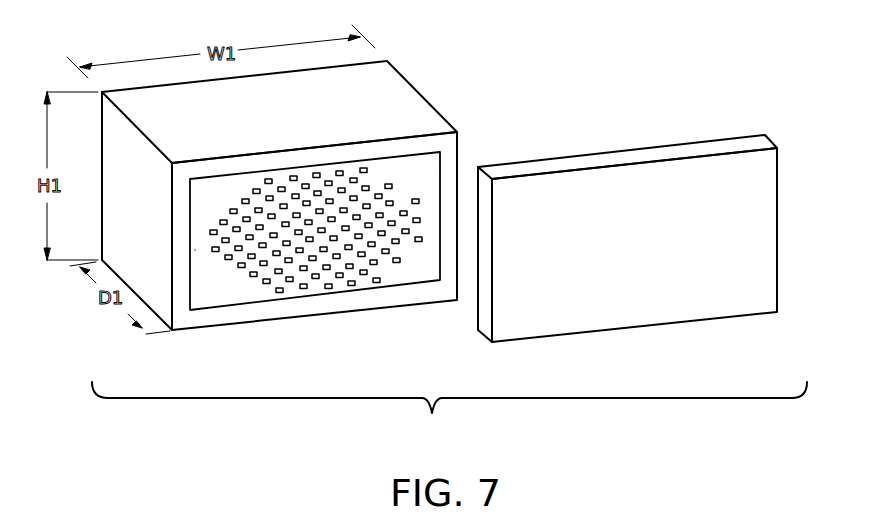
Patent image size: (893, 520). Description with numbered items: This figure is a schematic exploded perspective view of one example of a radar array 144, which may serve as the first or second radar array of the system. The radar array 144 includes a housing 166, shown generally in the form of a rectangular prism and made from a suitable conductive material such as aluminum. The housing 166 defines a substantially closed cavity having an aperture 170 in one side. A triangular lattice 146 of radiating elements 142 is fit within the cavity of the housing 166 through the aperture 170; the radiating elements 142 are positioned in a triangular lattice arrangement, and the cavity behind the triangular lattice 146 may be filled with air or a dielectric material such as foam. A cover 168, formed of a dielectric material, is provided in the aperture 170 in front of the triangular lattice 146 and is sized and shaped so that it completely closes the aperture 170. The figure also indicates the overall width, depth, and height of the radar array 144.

The radiating elements 142 is at (255, 186).
The radar array 144 is at (449, 414).
The triangular lattice 146 is at (195, 250).
The housing 166 is at (427, 99).
The cover 168 is at (630, 157).
The aperture 170 is at (190, 201).